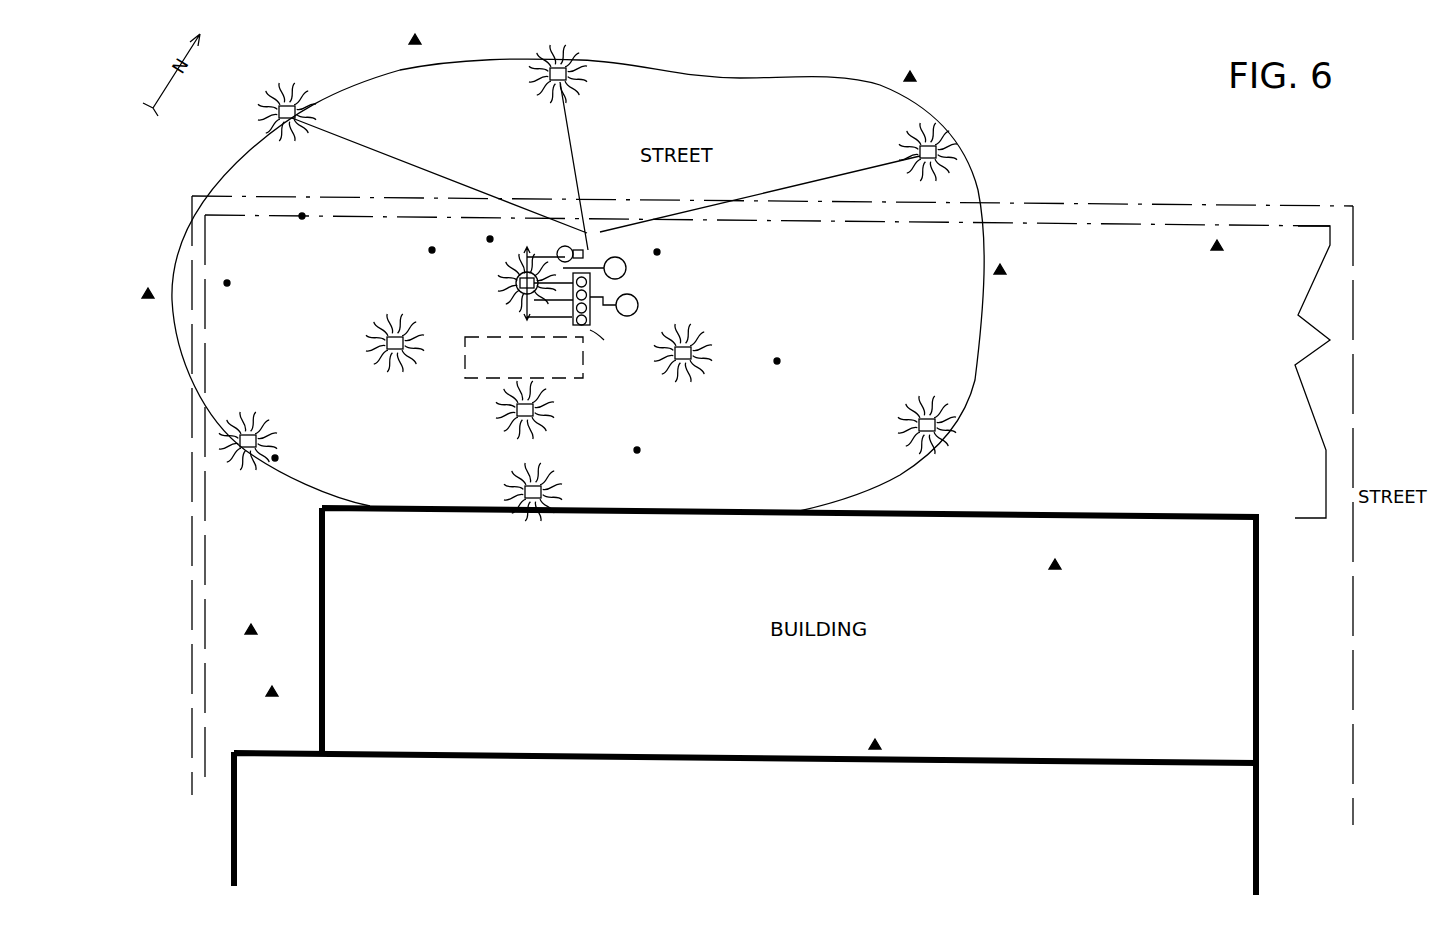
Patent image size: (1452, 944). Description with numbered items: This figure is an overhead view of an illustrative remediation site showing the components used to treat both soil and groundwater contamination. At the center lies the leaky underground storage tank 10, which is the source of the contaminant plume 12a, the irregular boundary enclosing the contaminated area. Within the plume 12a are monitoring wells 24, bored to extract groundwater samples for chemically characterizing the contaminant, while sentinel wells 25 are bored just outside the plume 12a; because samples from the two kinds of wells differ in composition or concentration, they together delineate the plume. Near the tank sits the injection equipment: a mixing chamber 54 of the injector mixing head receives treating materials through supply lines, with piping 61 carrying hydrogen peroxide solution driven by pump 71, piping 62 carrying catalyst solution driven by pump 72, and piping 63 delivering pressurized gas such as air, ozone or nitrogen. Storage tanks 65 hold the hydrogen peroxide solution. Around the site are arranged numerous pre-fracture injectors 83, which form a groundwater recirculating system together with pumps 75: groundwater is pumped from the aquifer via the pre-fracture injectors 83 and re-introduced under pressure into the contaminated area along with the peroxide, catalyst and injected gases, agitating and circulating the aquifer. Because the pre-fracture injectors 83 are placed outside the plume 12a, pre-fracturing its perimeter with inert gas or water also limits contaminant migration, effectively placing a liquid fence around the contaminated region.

The underground storage tank 10 is at (524, 357).
The contaminant plume 12a is at (991, 330).
The monitoring well 24 is at (640, 456).
The sentinel well 25 is at (695, 391).
The mixing chamber 54 is at (503, 288).
The piping 61 is at (583, 254).
The piping 62 is at (522, 310).
The piping 63 is at (566, 318).
The storage tank 65 is at (602, 286).
The pump 71 is at (608, 294).
The pump 72 is at (609, 339).
The pump 75 is at (551, 247).
The pre-fracture injector 83 is at (512, 292).